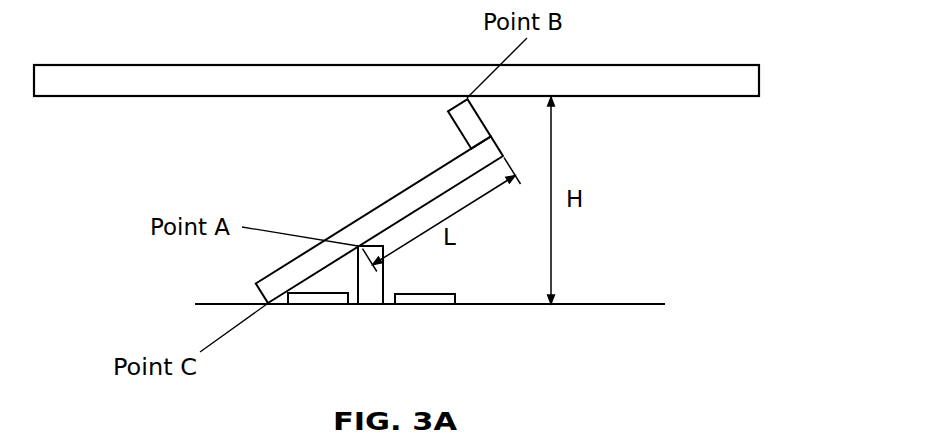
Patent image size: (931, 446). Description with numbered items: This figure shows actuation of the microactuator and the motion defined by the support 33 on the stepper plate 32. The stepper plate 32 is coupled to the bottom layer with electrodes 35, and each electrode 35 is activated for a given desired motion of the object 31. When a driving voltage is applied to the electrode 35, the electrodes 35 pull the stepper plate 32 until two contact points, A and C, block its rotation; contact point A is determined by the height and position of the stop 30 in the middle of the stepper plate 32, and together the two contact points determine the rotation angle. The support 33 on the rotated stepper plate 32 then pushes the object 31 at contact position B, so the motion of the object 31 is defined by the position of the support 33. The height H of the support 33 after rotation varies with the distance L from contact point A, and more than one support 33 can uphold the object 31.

The stop 30 is at (371, 297).
The object 31 is at (752, 107).
The stepper plate 32 is at (402, 202).
The support 33 is at (465, 123).
The electrode 35 is at (315, 297).